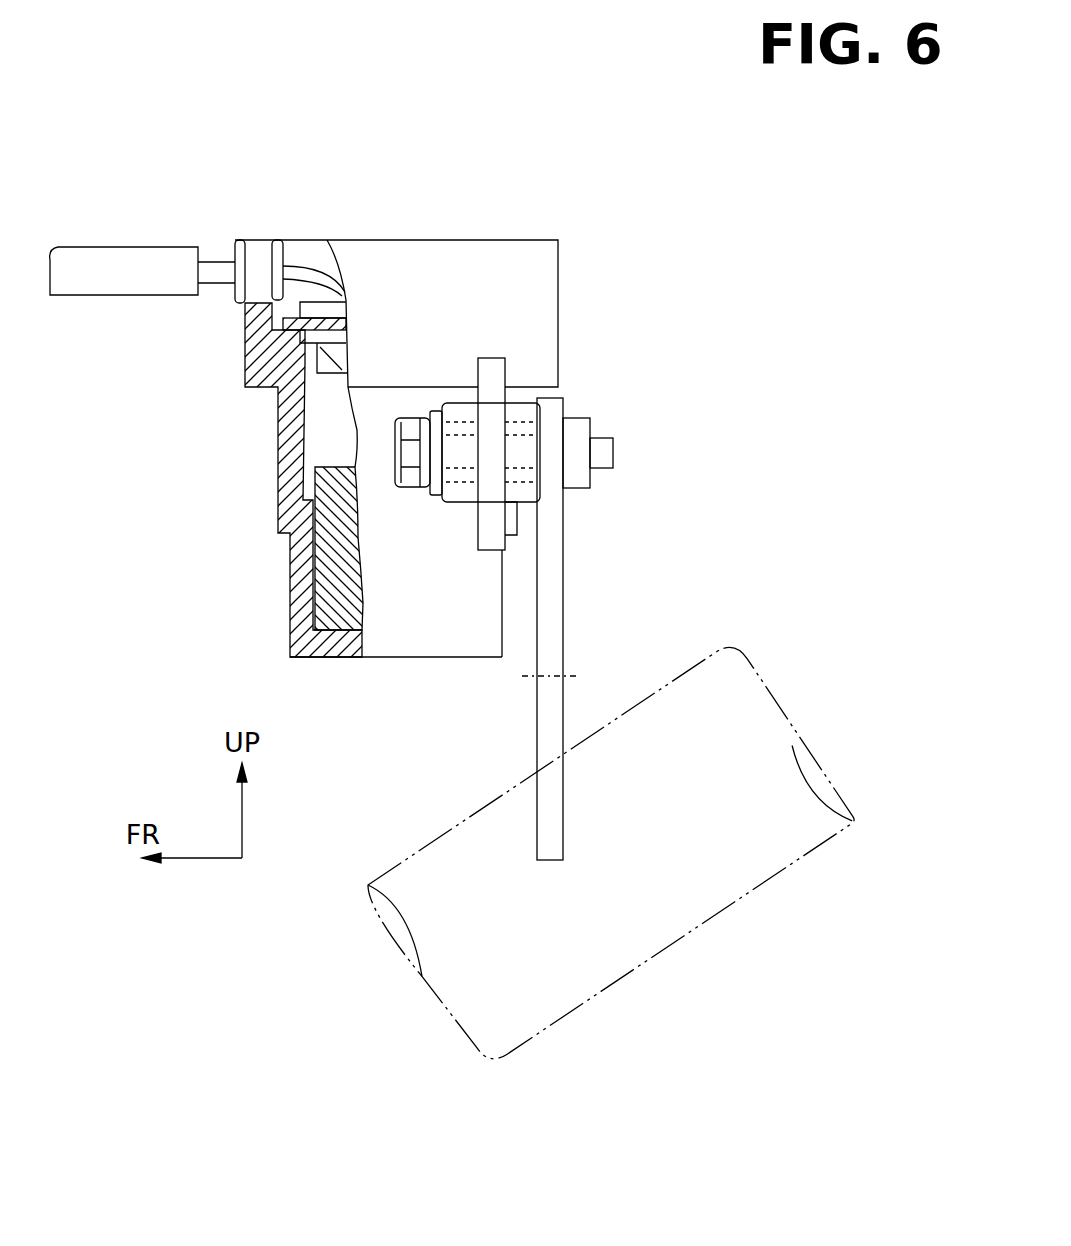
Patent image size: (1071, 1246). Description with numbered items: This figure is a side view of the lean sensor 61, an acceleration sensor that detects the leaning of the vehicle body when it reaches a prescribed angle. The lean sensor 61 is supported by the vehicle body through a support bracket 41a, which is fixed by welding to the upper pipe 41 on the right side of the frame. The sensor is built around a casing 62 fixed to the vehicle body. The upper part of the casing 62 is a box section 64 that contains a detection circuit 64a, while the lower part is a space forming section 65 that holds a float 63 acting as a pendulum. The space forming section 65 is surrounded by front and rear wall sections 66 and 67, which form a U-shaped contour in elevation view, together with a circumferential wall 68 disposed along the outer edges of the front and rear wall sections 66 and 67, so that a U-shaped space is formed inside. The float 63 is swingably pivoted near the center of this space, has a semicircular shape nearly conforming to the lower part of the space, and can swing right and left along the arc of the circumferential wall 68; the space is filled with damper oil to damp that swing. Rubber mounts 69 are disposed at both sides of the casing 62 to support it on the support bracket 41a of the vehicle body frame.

The lean sensor 61 is at (563, 235).
The casing 62 is at (731, 403).
The float 63 is at (322, 571).
The box section 64 is at (562, 358).
The detection circuit 64a is at (313, 253).
The space forming section 65 is at (505, 578).
The front wall section 66 is at (295, 621).
The rear wall section 67 is at (503, 637).
The circumferential wall 68 is at (412, 640).
The rubber mount 69 is at (523, 403).
The upper pipe 41 is at (430, 845).
The support bracket 41a is at (557, 617).